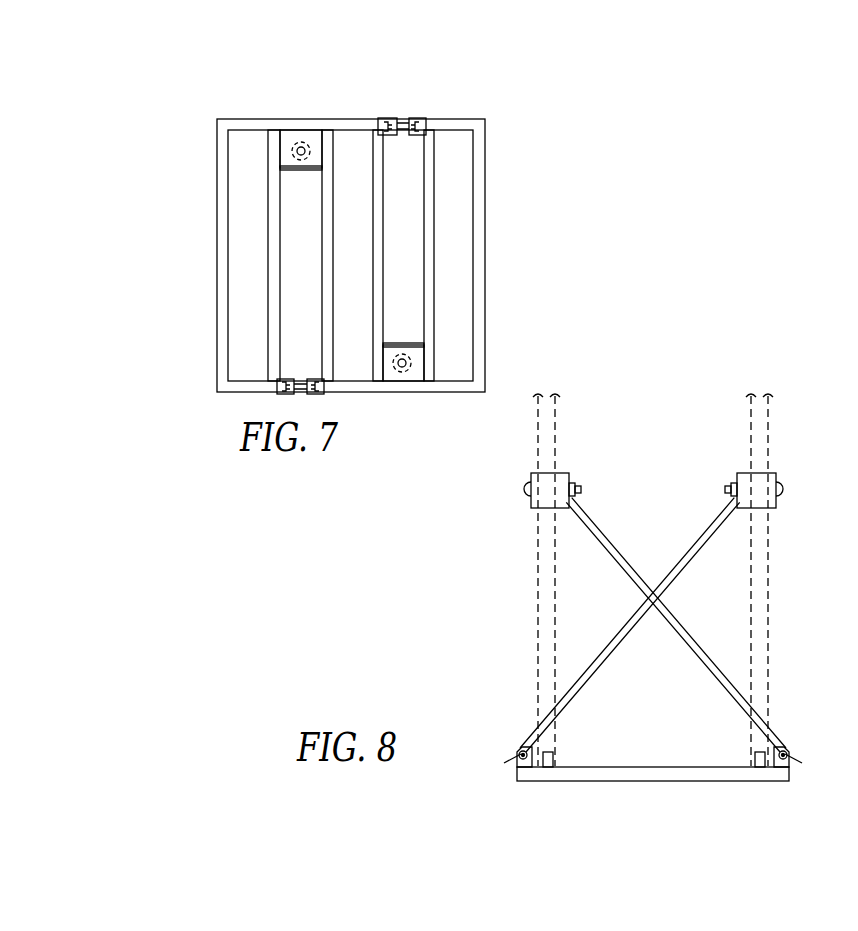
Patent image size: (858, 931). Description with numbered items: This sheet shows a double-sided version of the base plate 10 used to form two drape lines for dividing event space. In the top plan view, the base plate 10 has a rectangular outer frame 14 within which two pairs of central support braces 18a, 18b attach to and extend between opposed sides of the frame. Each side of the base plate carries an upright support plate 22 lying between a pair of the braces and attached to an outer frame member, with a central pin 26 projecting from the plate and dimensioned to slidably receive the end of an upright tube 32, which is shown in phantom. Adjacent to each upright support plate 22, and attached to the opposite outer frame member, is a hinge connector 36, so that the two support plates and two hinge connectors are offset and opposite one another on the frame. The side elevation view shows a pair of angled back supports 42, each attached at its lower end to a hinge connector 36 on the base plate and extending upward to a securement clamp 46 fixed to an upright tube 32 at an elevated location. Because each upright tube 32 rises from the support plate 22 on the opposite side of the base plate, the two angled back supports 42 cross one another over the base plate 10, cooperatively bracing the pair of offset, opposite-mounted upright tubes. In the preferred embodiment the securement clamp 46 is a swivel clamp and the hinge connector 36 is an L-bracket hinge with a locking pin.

In FIG. 7, the base plate 10 is at (226, 66).
In FIG. 7, the outer frame 14 is at (213, 163).
In FIG. 8, the outer frame 14 is at (683, 784).
In FIG. 7, the central support brace 18a is at (266, 222).
In FIG. 7, the central support brace 18b is at (318, 222).
In FIG. 7, the upright support plate 22 is at (290, 140).
In FIG. 7, the central pin 26 is at (293, 151).
In FIG. 8, the central pin 26 is at (550, 751).
In FIG. 7, the upright tube 32 is at (298, 139).
In FIG. 8, the upright tube 32 is at (548, 588).
In FIG. 7, the hinge connector 36 is at (404, 118).
In FIG. 8, the angled back support 42 is at (699, 652).
In FIG. 8, the securement clamp 46 is at (739, 476).